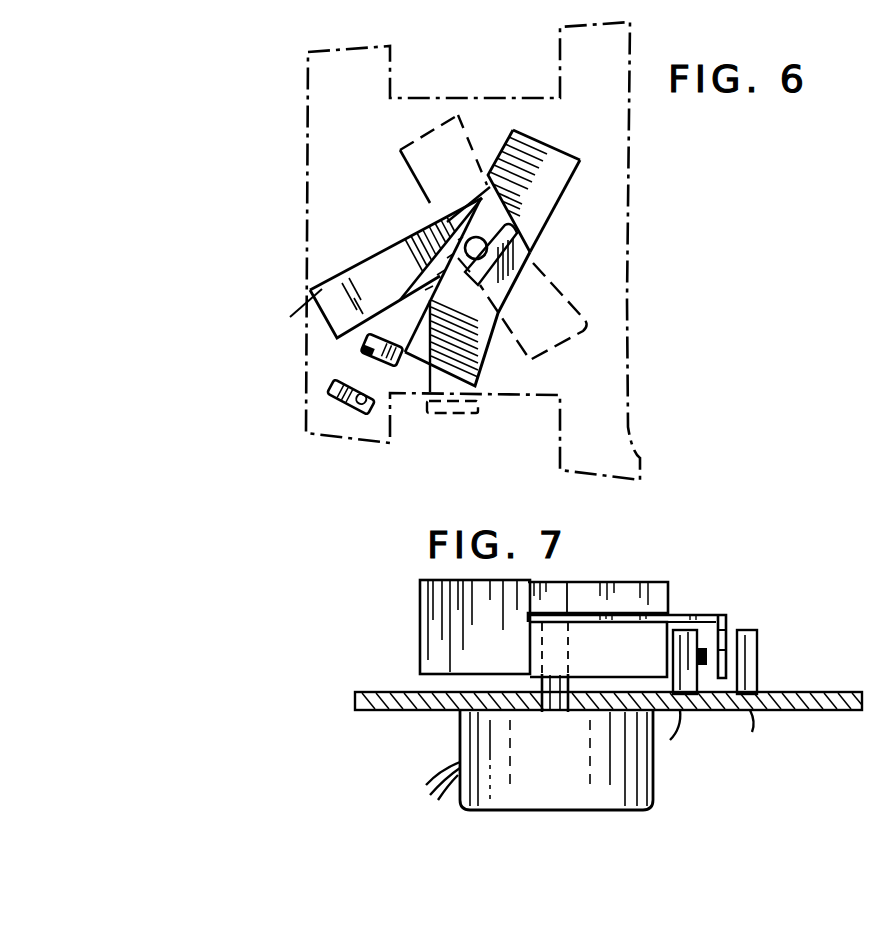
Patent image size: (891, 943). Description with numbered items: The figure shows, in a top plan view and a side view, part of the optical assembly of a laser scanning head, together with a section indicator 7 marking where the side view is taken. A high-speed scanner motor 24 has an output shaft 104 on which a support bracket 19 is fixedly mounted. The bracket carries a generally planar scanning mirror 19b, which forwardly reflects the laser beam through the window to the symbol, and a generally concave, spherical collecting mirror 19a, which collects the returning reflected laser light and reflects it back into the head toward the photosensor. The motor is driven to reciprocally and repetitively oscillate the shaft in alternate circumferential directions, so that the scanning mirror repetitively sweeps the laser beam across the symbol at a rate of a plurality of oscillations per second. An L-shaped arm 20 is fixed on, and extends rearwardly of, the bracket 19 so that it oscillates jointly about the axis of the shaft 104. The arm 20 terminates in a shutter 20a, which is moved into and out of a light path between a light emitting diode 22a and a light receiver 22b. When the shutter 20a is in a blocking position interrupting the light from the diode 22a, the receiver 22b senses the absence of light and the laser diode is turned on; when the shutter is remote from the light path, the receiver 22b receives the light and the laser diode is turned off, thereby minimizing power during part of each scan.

In FIG. 6, the section line 7- 7 is at (574, 129).
In FIG. 6, the support bracket 19 is at (590, 158).
In FIG. 7, the support bracket 19 is at (620, 597).
In FIG. 6, the collecting mirror 19a is at (545, 213).
In FIG. 6, the scanning mirror 19b is at (527, 243).
In FIG. 6, the L-shaped arm 20 is at (383, 272).
In FIG. 7, the L-shaped arm 20 is at (698, 614).
In FIG. 6, the shutter 20a is at (310, 308).
In FIG. 7, the shutter 20a is at (726, 637).
In FIG. 6, the light emitting diode 22a is at (353, 376).
In FIG. 7, the light emitting diode 22a is at (738, 664).
In FIG. 6, the light receiver 22b is at (364, 352).
In FIG. 7, the light receiver 22b is at (703, 666).
In FIG. 6, the output shaft 104 is at (458, 216).
In FIG. 7, the output shaft 104 is at (568, 690).
In FIG. 7, the scanner motor 24 is at (630, 780).